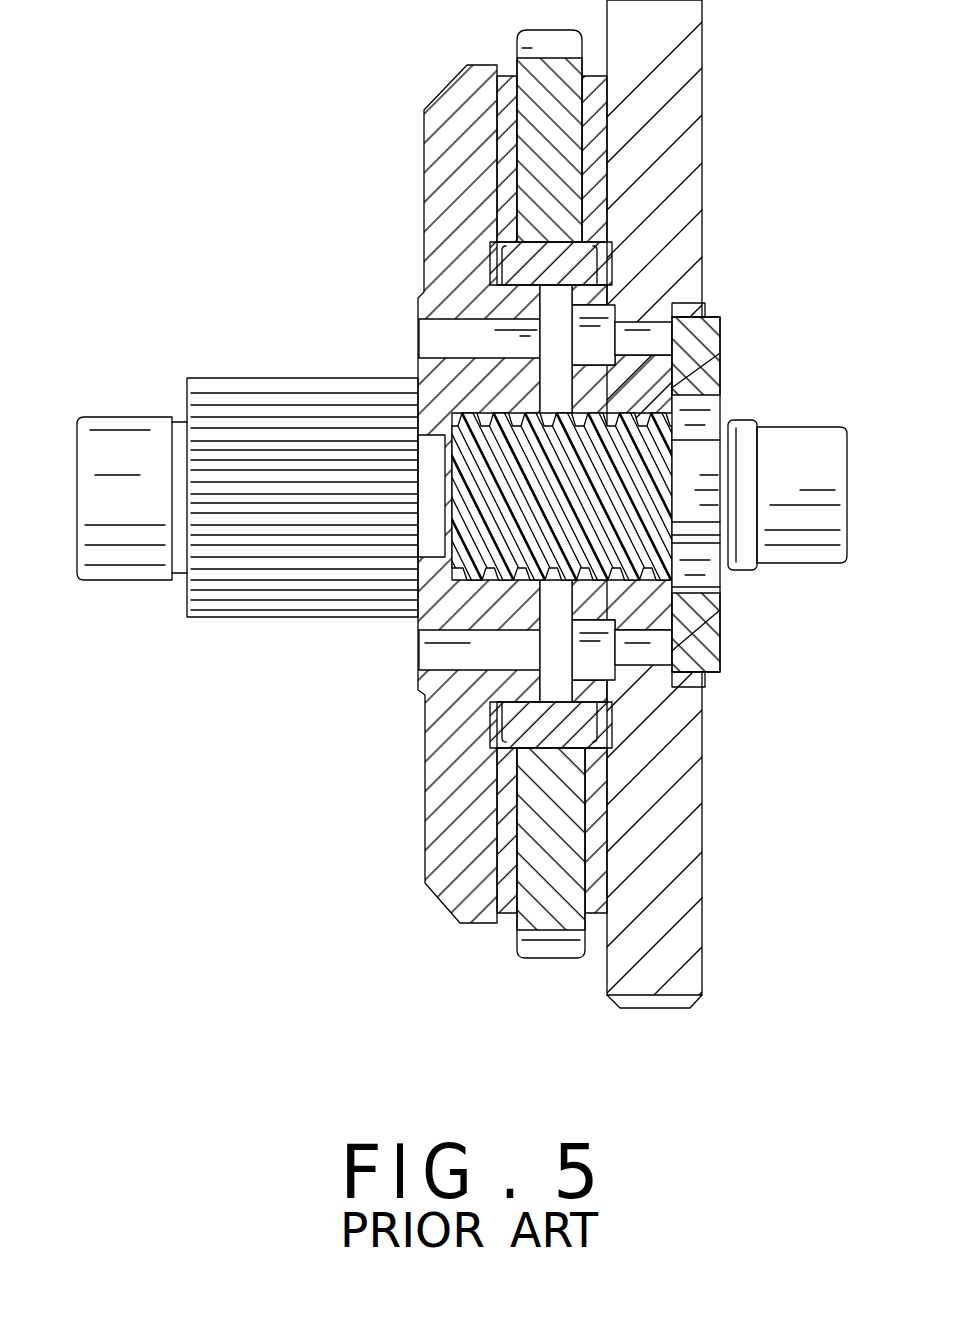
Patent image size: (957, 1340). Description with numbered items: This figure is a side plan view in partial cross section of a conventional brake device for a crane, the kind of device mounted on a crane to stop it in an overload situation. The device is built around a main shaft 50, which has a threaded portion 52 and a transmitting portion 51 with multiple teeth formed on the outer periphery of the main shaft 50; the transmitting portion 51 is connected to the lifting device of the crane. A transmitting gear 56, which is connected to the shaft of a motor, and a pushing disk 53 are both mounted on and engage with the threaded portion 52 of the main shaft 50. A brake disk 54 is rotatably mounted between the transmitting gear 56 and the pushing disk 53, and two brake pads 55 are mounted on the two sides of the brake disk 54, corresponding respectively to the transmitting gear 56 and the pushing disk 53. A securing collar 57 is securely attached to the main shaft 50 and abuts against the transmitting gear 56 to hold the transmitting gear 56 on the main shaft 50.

The main shaft 50 is at (388, 424).
The transmitting portion 51 is at (313, 597).
The threaded portion 52 is at (600, 404).
The pushing disk 53 is at (438, 862).
The brake disk 54 is at (563, 908).
The brake pads 55 is at (598, 815).
The transmitting gear 56 is at (690, 972).
The securing collar 57 is at (710, 630).